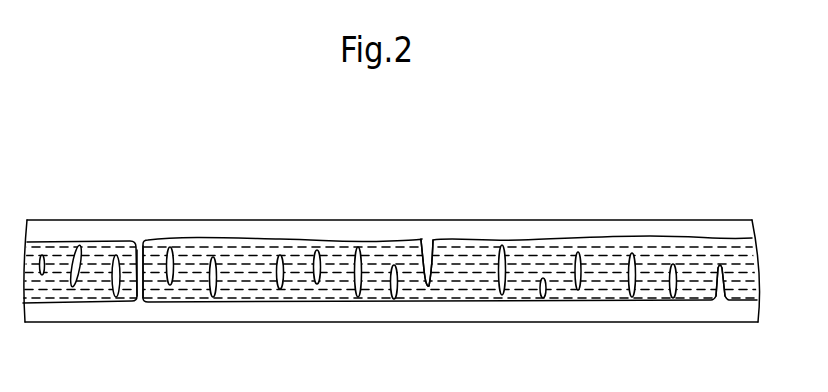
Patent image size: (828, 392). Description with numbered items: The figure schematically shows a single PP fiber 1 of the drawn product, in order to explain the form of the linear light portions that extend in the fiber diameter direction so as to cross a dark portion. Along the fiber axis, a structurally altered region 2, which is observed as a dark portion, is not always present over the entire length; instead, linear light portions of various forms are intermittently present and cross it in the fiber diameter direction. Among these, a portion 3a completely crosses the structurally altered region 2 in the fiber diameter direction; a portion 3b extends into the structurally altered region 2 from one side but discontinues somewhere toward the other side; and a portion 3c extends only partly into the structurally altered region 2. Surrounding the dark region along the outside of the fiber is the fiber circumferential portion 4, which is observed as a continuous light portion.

The PP fiber 1 is at (738, 164).
The structurally altered region 2 is at (100, 257).
The portion completely crossing the structurally altered region 3a is at (138, 298).
The portion extending from one side and discontinuing 3b is at (427, 236).
The portion extending partly in the structurally altered region 3c is at (73, 251).
The fiber circumferential portion 4 is at (335, 232).